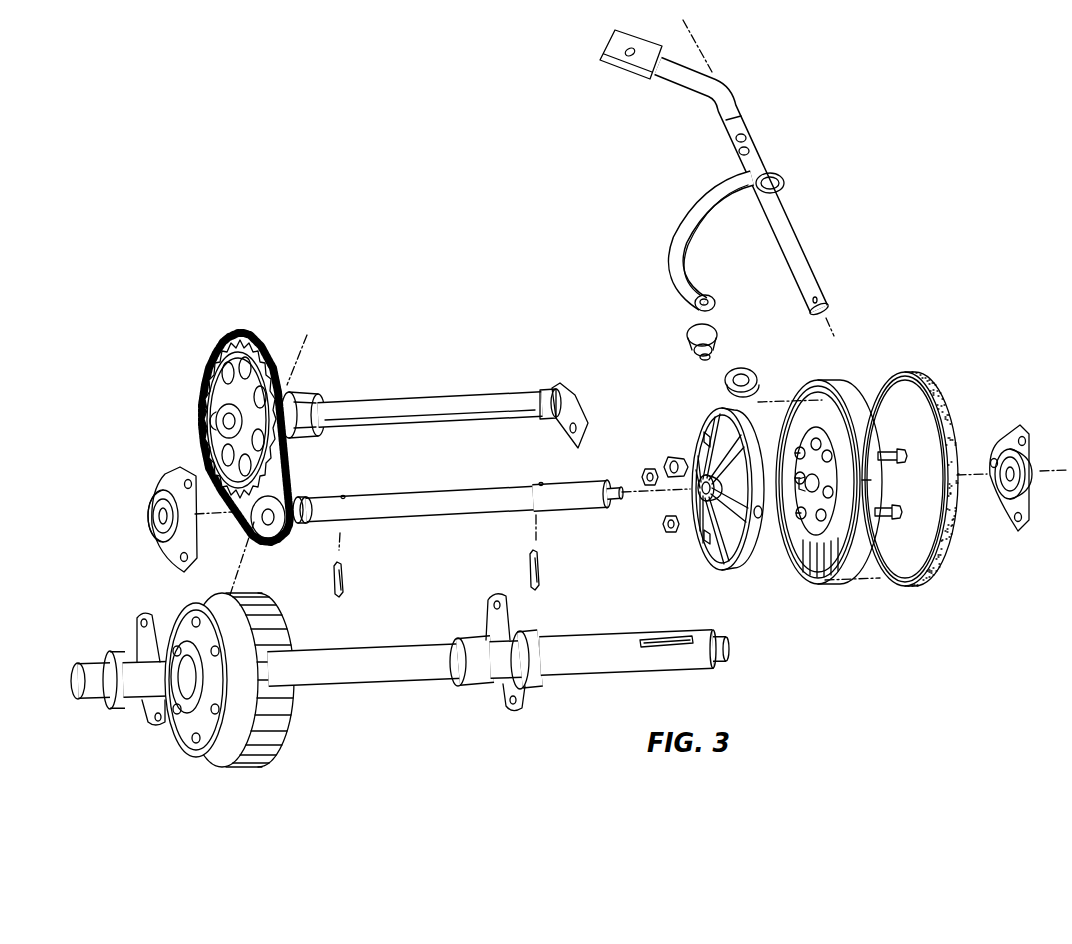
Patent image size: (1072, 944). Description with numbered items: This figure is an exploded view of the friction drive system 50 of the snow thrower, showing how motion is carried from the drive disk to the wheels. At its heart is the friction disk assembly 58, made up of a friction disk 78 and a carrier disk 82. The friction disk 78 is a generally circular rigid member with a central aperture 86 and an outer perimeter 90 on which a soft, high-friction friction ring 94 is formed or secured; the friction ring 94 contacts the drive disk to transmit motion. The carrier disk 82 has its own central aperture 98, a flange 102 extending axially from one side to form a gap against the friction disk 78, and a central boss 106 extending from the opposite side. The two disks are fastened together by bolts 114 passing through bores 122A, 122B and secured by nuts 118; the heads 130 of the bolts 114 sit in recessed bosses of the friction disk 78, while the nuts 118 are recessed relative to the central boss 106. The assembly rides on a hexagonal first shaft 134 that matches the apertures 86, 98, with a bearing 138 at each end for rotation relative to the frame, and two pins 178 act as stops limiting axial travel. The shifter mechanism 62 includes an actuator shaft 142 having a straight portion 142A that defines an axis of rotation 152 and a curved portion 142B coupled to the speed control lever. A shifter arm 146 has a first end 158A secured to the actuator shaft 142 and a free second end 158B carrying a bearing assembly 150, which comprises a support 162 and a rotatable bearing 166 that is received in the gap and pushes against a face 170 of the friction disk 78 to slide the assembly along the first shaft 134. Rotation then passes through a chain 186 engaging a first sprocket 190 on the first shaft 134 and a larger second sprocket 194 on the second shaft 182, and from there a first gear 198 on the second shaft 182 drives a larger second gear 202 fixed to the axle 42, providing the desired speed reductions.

The axle 42 is at (400, 680).
The drive assembly 50 is at (373, 165).
The friction disk assembly 58 is at (843, 335).
The shifter mechanism 62 is at (764, 107).
The friction disk 78 is at (821, 480).
The carrier disk 82 is at (723, 483).
The central aperture 86 is at (821, 478).
The outer perimeter 90 is at (845, 582).
The friction ring 94 is at (932, 492).
The central aperture 98 is at (698, 492).
The flange 102 is at (748, 553).
The central boss 106 is at (710, 467).
The bolts 114 is at (885, 452).
The nuts 118 is at (653, 467).
The bore 122A is at (820, 437).
The bore 122B is at (714, 440).
The heads 130 is at (902, 455).
The first shaft 134 is at (440, 495).
The bearing 138 is at (155, 490).
The actuator shaft 142 is at (731, 173).
The straight portion 142A is at (798, 253).
The curved portion 142B is at (670, 75).
The shifter arm 146 is at (726, 233).
The bearing assembly 150 is at (757, 330).
The axis of rotation 152 is at (704, 53).
The first end 158A is at (777, 177).
The second end 158B is at (695, 311).
The support 162 is at (690, 340).
The bearing 166 is at (723, 376).
The face 170 is at (818, 398).
The pins 178 is at (347, 582).
The second shaft 182 is at (473, 400).
The chain 186 is at (300, 457).
The first sprocket 190 is at (278, 540).
The second sprocket 194 is at (205, 395).
The first gear 198 is at (299, 398).
The second gear 202 is at (187, 740).